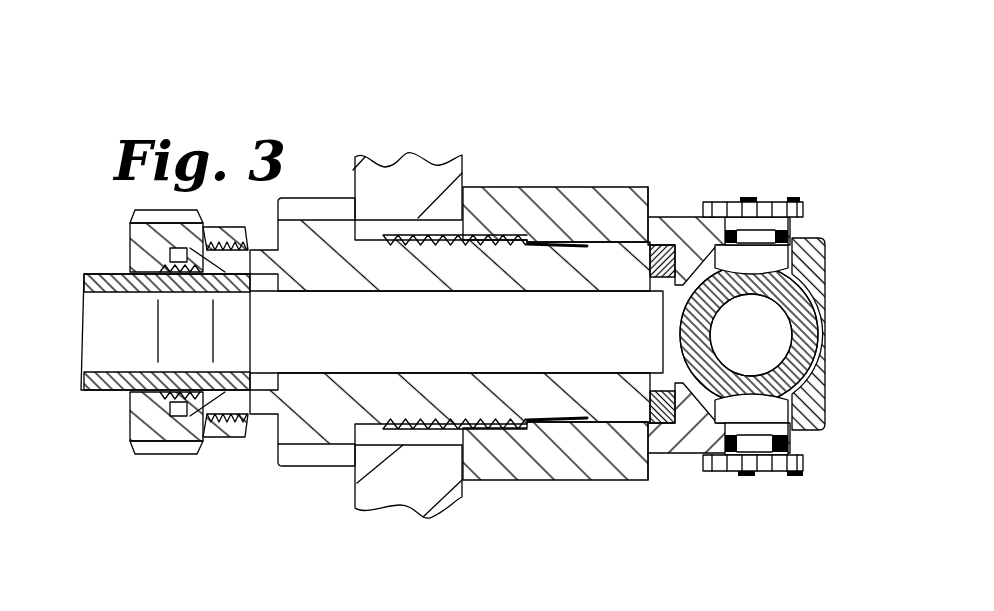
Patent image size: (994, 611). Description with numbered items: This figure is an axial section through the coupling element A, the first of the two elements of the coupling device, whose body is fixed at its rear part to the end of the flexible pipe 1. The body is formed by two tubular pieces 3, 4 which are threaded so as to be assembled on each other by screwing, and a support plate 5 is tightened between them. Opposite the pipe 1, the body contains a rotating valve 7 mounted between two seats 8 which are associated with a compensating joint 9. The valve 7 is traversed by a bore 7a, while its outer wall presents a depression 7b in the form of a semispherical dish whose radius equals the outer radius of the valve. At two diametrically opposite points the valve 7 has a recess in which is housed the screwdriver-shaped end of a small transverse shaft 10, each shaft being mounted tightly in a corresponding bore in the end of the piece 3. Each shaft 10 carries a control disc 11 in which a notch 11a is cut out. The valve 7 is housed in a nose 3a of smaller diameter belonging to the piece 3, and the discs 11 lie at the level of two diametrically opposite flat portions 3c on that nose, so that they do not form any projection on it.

The flexible pipe 1 is at (100, 332).
The tubular piece 3 is at (500, 187).
The nose 3a is at (680, 453).
The flat portions 3c is at (675, 213).
The tubular piece 4 is at (503, 398).
The support plate 5 is at (410, 178).
The rotating valve 7 is at (688, 306).
The bore 7a is at (714, 348).
The depression 7b is at (825, 340).
The seats 8 is at (690, 217).
The compensating joint 9 is at (693, 432).
The transverse shaft 10 is at (757, 217).
The control disc 11 is at (723, 202).
The notch 11a is at (792, 192).
The coupling element A is at (680, 135).